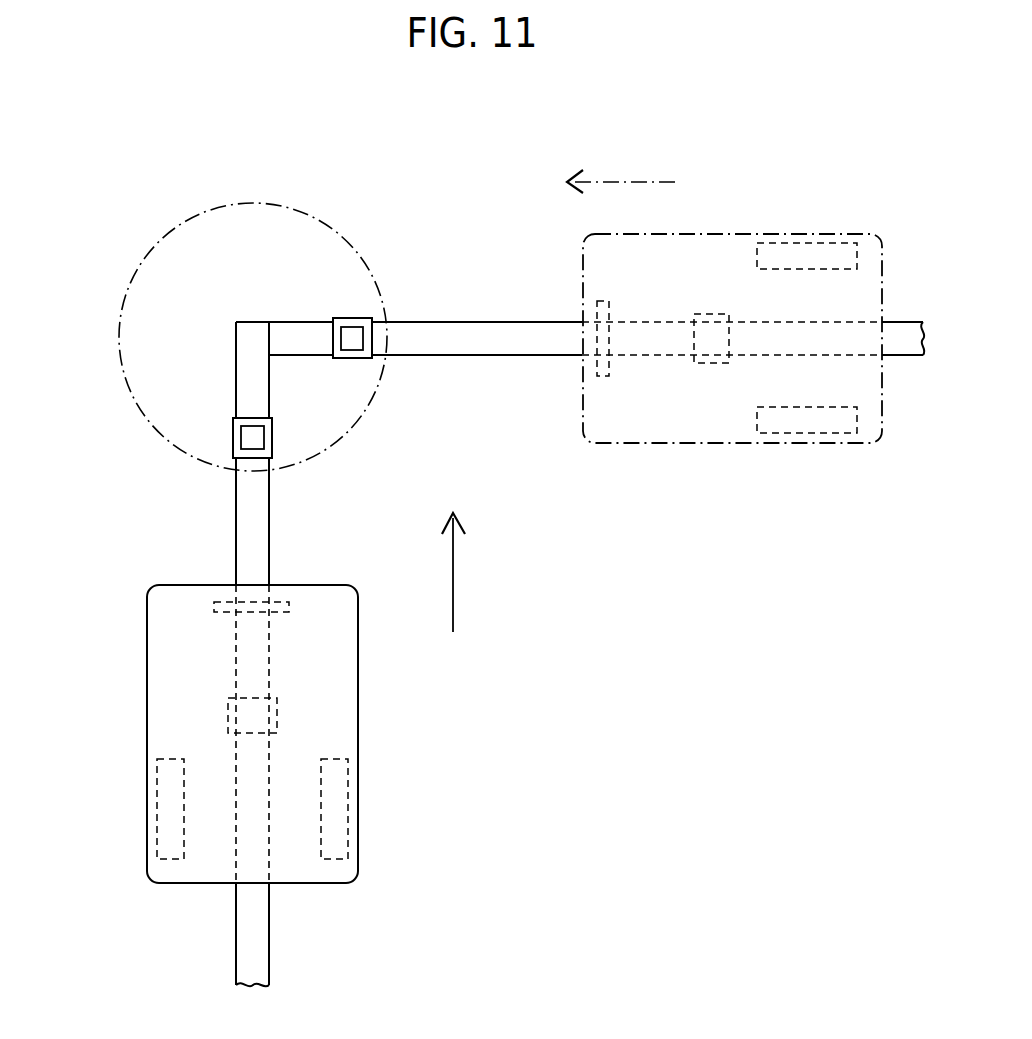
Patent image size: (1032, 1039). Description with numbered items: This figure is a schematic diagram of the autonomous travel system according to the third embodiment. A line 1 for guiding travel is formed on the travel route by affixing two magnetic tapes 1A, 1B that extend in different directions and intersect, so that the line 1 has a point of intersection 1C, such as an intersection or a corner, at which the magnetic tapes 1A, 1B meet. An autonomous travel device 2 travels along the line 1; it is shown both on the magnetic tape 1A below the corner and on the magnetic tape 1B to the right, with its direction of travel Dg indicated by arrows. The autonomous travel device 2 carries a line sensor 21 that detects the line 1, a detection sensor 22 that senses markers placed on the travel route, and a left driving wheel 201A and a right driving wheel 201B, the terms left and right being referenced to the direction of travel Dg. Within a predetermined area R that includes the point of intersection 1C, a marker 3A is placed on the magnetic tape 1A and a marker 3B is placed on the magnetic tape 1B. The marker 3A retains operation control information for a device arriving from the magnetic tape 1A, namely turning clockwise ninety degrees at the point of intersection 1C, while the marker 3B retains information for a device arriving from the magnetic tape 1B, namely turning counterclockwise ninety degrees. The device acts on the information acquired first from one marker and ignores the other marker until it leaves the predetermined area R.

The line 1 is at (527, 604).
The magnetic tape 1A is at (236, 528).
The magnetic tape 1B is at (505, 322).
The point of intersection 1C is at (252, 338).
The autonomous travel device 2 is at (147, 652).
The marker 3A is at (233, 437).
The marker 3B is at (350, 318).
The line sensor 21 is at (289, 607).
The detection sensor 22 is at (277, 715).
The left driving wheel 201A is at (157, 805).
The right driving wheel 201B is at (348, 812).
The predetermined area R is at (347, 229).
The direction of travel Dg is at (561, 381).